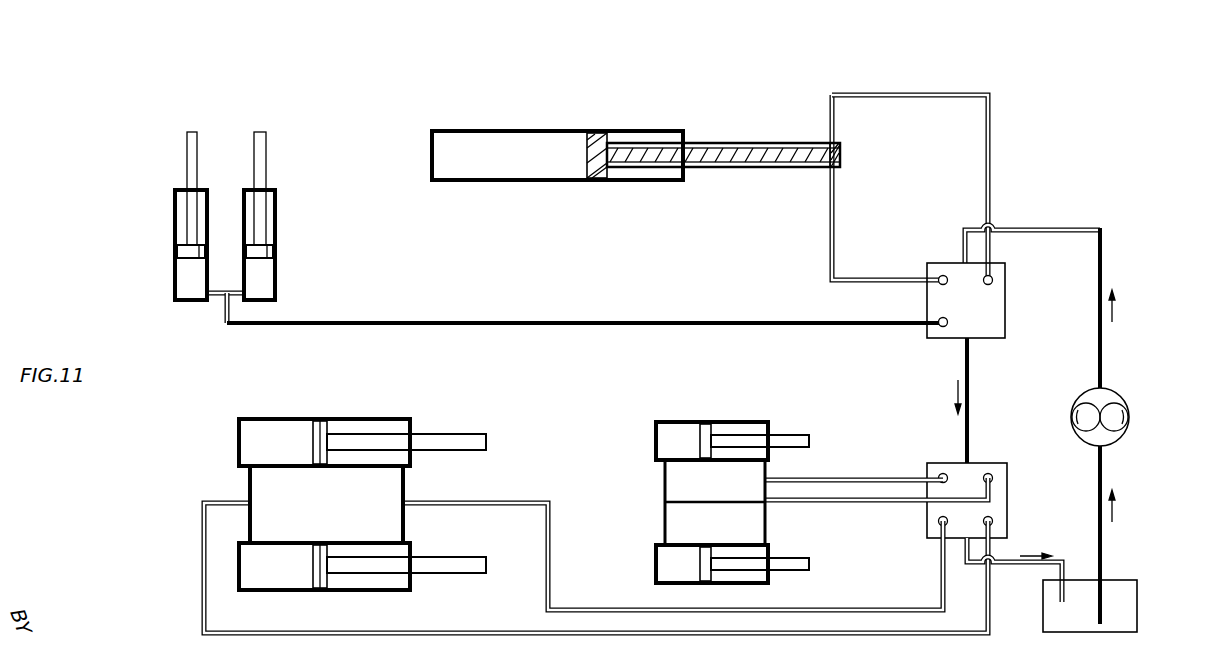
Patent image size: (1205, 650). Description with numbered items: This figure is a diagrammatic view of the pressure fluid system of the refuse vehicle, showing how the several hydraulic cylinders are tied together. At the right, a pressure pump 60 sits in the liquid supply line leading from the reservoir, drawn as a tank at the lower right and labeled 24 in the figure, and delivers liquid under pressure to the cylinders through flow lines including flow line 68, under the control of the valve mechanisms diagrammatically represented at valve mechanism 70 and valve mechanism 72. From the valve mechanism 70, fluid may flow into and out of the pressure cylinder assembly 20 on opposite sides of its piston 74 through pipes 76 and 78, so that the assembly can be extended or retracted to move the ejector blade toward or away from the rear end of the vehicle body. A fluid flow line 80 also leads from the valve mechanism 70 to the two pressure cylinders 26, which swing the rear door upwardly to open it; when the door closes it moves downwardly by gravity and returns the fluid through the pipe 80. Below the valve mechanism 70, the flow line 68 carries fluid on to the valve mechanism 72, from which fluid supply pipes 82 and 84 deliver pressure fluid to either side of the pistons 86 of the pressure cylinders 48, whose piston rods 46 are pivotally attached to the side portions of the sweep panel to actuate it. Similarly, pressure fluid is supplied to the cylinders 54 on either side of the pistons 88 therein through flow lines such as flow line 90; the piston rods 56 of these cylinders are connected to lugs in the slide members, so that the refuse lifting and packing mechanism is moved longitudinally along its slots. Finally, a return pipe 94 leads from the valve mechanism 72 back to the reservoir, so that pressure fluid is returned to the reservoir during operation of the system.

The pressure cylinder assembly 20 is at (647, 132).
The reservoir 24 is at (1118, 633).
The pressure cylinders 26 is at (175, 258).
The piston rod 46 is at (795, 434).
The pressure cylinder 48 is at (676, 422).
The cylinders 54 is at (266, 419).
The piston rods 56 is at (466, 436).
The pressure pump 60 is at (1103, 250).
The flow line 68 is at (970, 402).
The valve mechanism 70 is at (1007, 310).
The valve mechanism 72 is at (1008, 497).
The piston 74 is at (597, 133).
The pipe 76 is at (900, 93).
The pipe 78 is at (836, 250).
The fluid flow line 80 is at (505, 320).
The fluid supply pipe 82 is at (874, 478).
The fluid supply pipe 84 is at (897, 502).
The pistons 86 is at (710, 422).
The pistons 88 is at (322, 419).
The flow line 90 is at (550, 553).
The return pipe 94 is at (1029, 568).